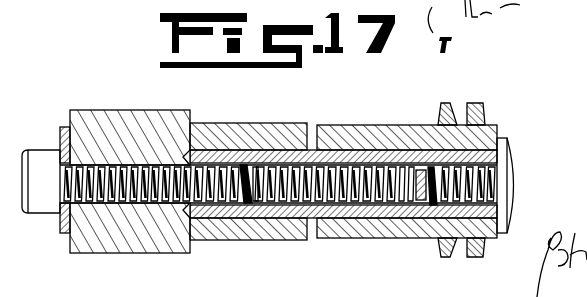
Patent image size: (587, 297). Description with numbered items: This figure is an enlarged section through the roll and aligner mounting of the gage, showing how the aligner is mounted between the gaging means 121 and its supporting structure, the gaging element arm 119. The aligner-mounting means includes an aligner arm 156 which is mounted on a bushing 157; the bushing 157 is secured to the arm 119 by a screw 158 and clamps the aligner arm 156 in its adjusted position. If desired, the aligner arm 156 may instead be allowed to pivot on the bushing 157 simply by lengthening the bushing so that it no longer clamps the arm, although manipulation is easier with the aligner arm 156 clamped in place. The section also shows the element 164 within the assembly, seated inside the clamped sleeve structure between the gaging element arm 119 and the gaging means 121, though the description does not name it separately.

The screw 158 is at (42, 157).
The gaging element arm 119 is at (103, 115).
The aligner arm 156 is at (213, 123).
The bushing 157 is at (260, 158).
The outer sleeve section 164 is at (362, 150).
The gaging means 121 is at (485, 110).